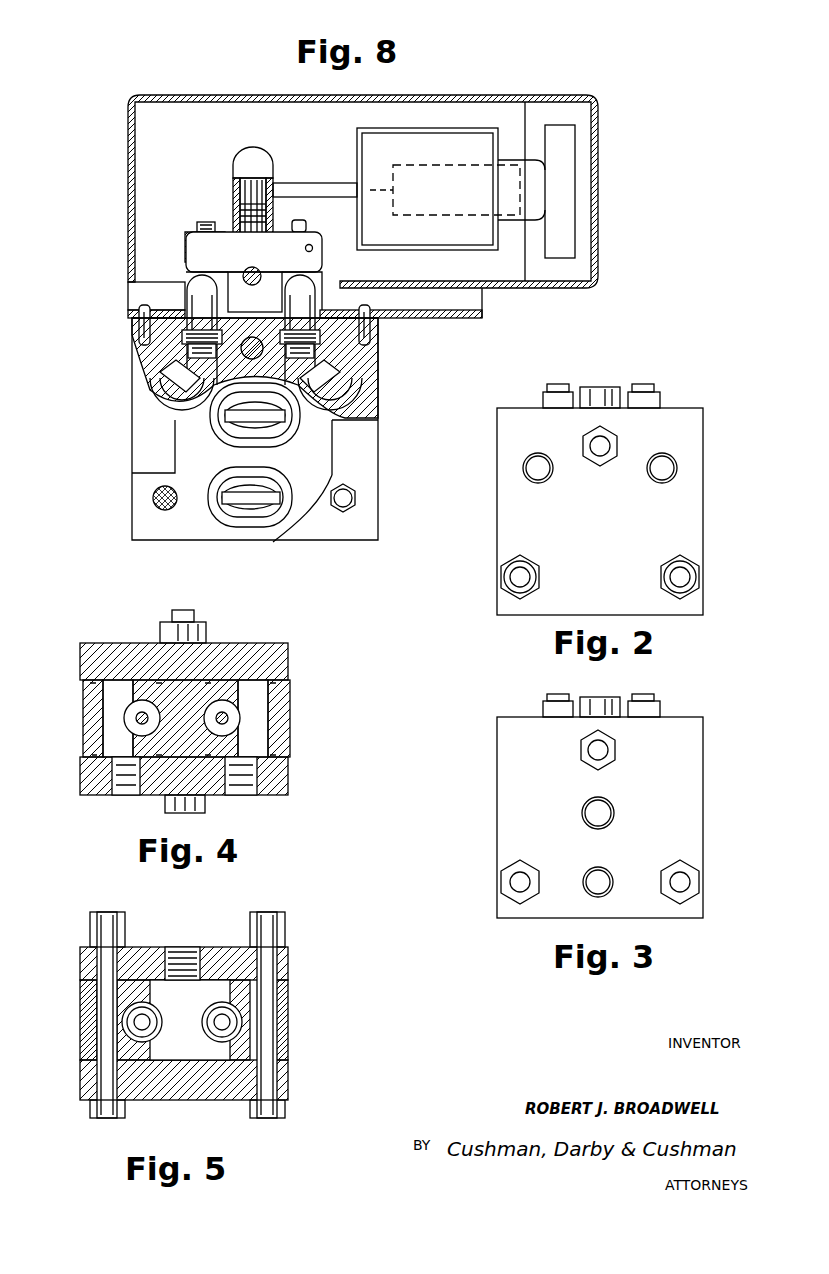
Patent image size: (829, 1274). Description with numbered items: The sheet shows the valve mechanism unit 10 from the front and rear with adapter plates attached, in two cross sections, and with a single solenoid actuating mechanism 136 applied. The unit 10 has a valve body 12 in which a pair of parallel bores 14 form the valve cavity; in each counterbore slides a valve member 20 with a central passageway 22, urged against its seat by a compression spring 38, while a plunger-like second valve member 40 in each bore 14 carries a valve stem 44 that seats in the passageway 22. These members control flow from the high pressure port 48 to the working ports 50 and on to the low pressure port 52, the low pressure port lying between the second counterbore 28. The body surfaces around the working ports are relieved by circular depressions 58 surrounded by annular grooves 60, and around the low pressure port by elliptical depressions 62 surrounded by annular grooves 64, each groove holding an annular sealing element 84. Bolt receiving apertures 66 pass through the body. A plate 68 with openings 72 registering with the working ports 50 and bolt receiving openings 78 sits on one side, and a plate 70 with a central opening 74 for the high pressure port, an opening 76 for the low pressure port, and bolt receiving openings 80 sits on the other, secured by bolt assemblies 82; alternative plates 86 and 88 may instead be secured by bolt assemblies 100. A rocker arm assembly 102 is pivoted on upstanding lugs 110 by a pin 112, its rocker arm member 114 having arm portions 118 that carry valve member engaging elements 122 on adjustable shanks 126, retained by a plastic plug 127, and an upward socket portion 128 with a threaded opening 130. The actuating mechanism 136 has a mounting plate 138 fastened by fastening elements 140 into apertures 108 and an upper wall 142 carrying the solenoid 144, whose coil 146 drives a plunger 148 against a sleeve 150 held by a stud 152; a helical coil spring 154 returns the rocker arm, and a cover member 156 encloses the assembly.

In FIG. 8, the valve mechanism unit 10 is at (386, 381).
In FIG. 4, the valve mechanism unit 10 is at (296, 711).
In FIG. 5, the valve mechanism unit 10 is at (292, 1040).
In FIG. 8, the valve body 12 is at (182, 461).
In FIG. 4, the valve body 12 is at (95, 706).
In FIG. 5, the valve body 12 is at (98, 1040).
In FIG. 8, the bores 14 is at (215, 330).
In FIG. 4, the bores 14 is at (212, 706).
In FIG. 5, the valve member 20 is at (138, 1040).
In FIG. 5, the passageway 22 is at (150, 1020).
In FIG. 5, the second counterbore 28 is at (214, 1022).
In FIG. 5, the compression spring 38 is at (230, 1058).
In FIG. 8, the second valve member 40 is at (251, 338).
In FIG. 2, the second valve member 40 is at (650, 384).
In FIG. 3, the second valve member 40 is at (650, 694).
In FIG. 4, the second valve member 40 is at (214, 718).
In FIG. 4, the valve stem 44 is at (212, 732).
In FIG. 8, the high pressure port 48 is at (246, 420).
In FIG. 8, the working port 50 is at (172, 378).
In FIG. 4, the working port 50 is at (112, 735).
In FIG. 8, the low pressure port 52 is at (228, 495).
In FIG. 5, the low pressure port 52 is at (224, 1036).
In FIG. 4, the circular depressions 58 is at (115, 683).
In FIG. 4, the annular groove 60 is at (290, 683).
In FIG. 5, the elliptical depressions 62 is at (190, 1058).
In FIG. 5, the annular groove 64 is at (215, 986).
In FIG. 5, the bolt receiving apertures 66 is at (98, 996).
In FIG. 2, the adapter plate 68 is at (682, 425).
In FIG. 4, the adapter plate 68 is at (285, 775).
In FIG. 5, the adapter plate 68 is at (132, 1082).
In FIG. 3, the adapter plate 70 is at (684, 807).
In FIG. 4, the adapter plate 70 is at (146, 648).
In FIG. 5, the adapter plate 70 is at (228, 950).
In FIG. 2, the openings 72 is at (530, 463).
In FIG. 4, the openings 72 is at (128, 796).
In FIG. 3, the central opening 74 is at (608, 806).
In FIG. 3, the opening 76 is at (600, 875).
In FIG. 5, the opening 76 is at (182, 950).
In FIG. 5, the bolt receiving openings 78 is at (105, 962).
In FIG. 5, the bolt receiving openings 80 is at (100, 1086).
In FIG. 2, the bolt assemblies 82 is at (592, 450).
In FIG. 3, the bolt assemblies 82 is at (592, 753).
In FIG. 4, the bolt assemblies 82 is at (188, 630).
In FIG. 5, the bolt assemblies 82 is at (100, 1000).
In FIG. 4, the annular sealing element 84 is at (98, 685).
In FIG. 5, the annular sealing element 84 is at (150, 985).
In FIG. 8, the plate 86 is at (355, 470).
In FIG. 8, the plate 88 is at (140, 434).
In FIG. 8, the bolt assemblies 100 is at (170, 506).
In FIG. 8, the rocker arm assembly 102 is at (225, 218).
In FIG. 8, the fastening receiving apertures 108 is at (135, 338).
In FIG. 8, the lugs 110 is at (232, 297).
In FIG. 2, the lugs 110 is at (595, 392).
In FIG. 3, the lugs 110 is at (596, 710).
In FIG. 8, the pin 112 is at (300, 330).
In FIG. 8, the rocker arm member 114 is at (266, 262).
In FIG. 8, the arm portions 118 is at (190, 264).
In FIG. 8, the valve member engaging element 122 is at (192, 248).
In FIG. 8, the shank 126 is at (197, 226).
In FIG. 8, the plastic plug 127 is at (313, 248).
In FIG. 8, the socket portion 128 is at (272, 210).
In FIG. 8, the threaded opening 130 is at (248, 212).
In FIG. 8, the single solenoid actuating mechanism 136 is at (600, 155).
In FIG. 8, the mounting plate 138 is at (484, 314).
In FIG. 8, the fastening elements 140 is at (139, 325).
In FIG. 8, the upper wall 142 is at (410, 288).
In FIG. 8, the solenoid 144 is at (508, 95).
In FIG. 8, the coil 146 is at (418, 95).
In FIG. 8, the plunger 148 is at (315, 185).
In FIG. 8, the sleeve 150 is at (236, 186).
In FIG. 8, the stud 152 is at (253, 160).
In FIG. 8, the helical coil spring 154 is at (180, 296).
In FIG. 8, the cover member 156 is at (268, 95).